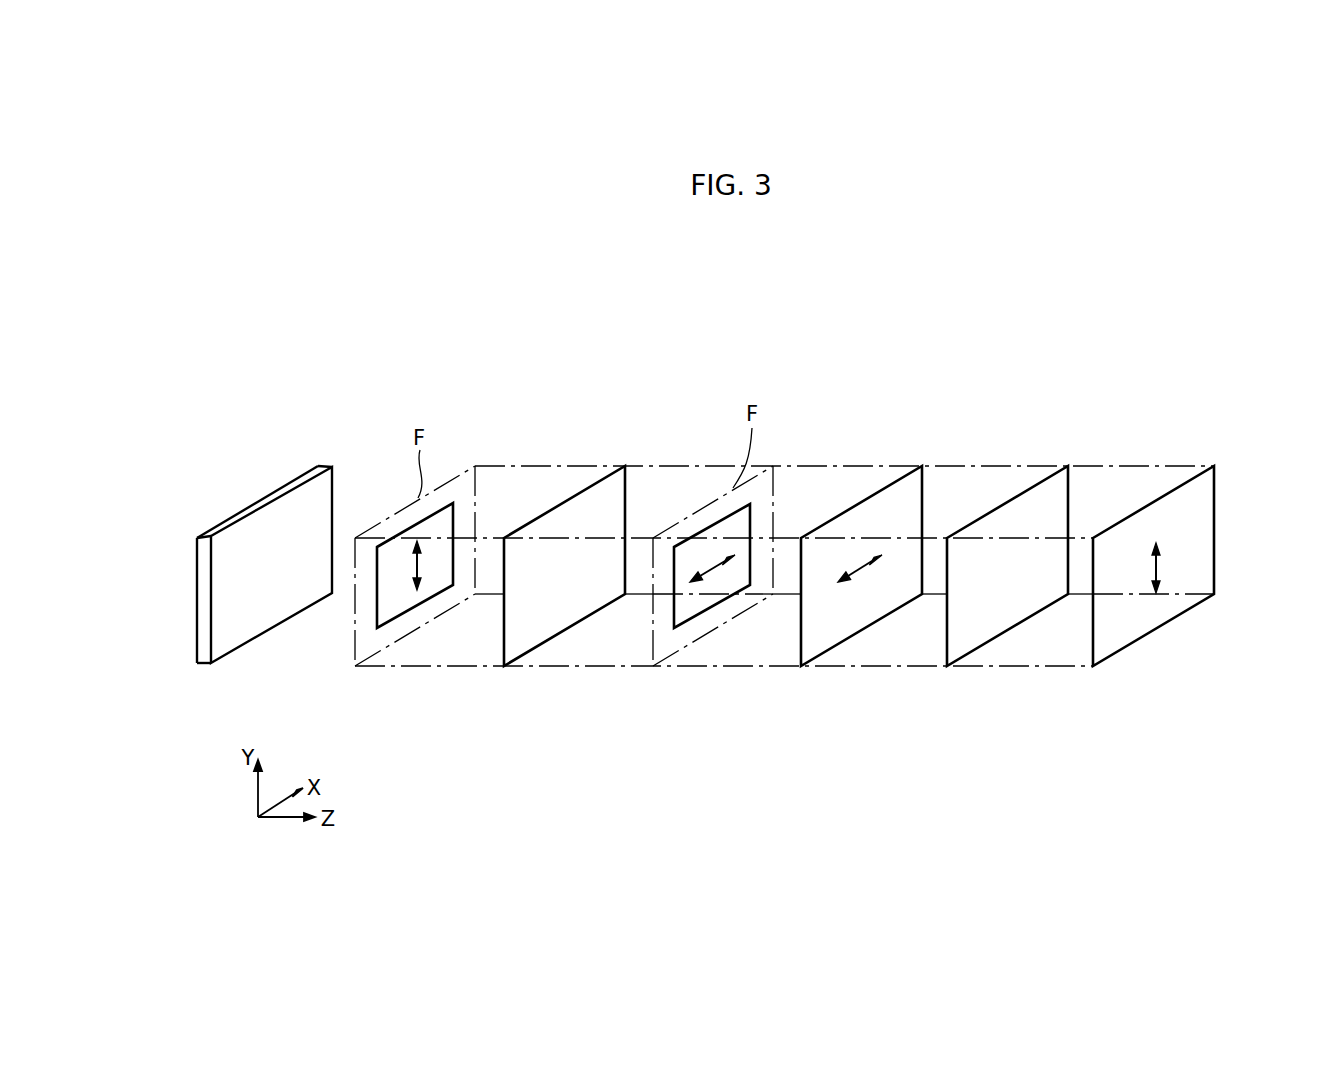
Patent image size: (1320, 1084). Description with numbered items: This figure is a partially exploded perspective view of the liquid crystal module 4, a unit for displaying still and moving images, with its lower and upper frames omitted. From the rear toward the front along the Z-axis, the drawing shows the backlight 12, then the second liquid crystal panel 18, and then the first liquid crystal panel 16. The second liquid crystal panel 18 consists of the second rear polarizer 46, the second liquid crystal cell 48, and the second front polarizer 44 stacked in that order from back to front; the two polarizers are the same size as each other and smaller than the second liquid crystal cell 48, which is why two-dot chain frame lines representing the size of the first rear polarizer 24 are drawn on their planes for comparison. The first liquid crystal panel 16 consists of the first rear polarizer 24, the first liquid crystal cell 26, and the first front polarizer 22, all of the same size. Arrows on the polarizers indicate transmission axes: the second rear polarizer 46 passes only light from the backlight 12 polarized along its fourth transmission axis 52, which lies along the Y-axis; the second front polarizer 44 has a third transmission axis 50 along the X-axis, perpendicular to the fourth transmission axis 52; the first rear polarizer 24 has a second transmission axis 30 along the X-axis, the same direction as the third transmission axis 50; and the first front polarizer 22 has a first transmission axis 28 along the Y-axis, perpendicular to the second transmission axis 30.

The liquid crystal module 4 is at (1040, 371).
The backlight 12 is at (215, 592).
The fourth transmission axis 52 is at (410, 565).
The second rear polarizer 46 is at (390, 608).
The second liquid crystal cell 48 is at (528, 633).
The second front polarizer 44 is at (685, 610).
The third transmission axis 50 is at (711, 565).
The second liquid crystal panel 18 is at (521, 596).
The first rear polarizer 24 is at (825, 633).
The second transmission axis 30 is at (860, 567).
The first liquid crystal cell 26 is at (967, 640).
The first front polarizer 22 is at (1113, 643).
The first transmission axis 28 is at (1162, 567).
The first liquid crystal panel 16 is at (1032, 598).